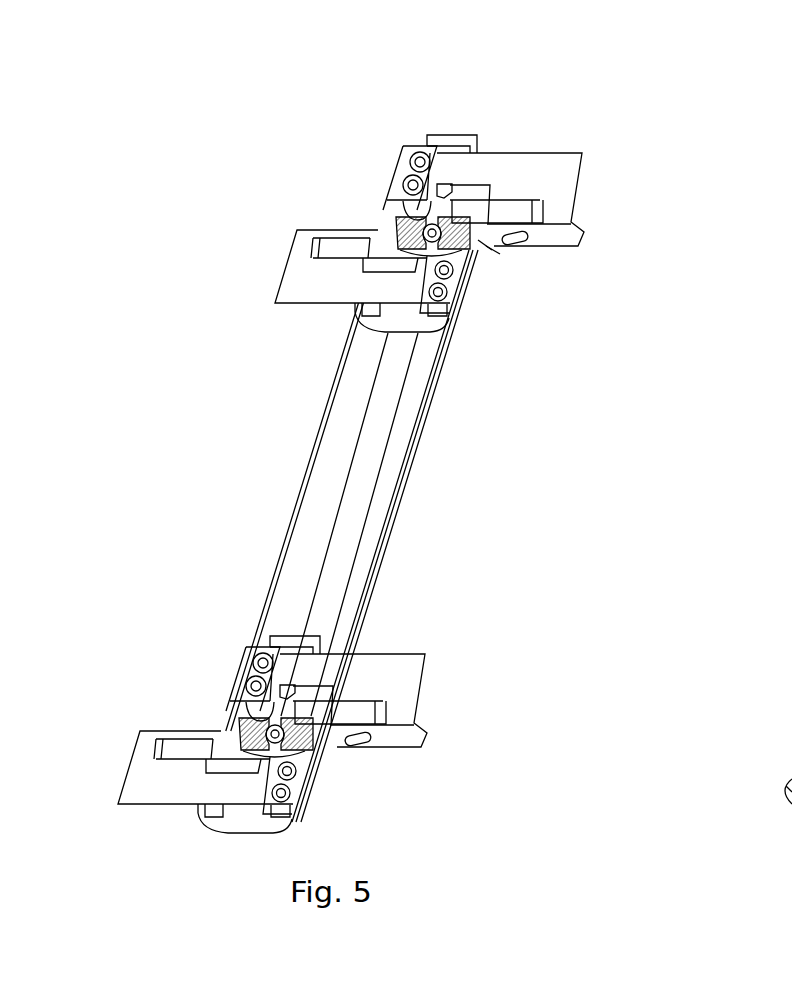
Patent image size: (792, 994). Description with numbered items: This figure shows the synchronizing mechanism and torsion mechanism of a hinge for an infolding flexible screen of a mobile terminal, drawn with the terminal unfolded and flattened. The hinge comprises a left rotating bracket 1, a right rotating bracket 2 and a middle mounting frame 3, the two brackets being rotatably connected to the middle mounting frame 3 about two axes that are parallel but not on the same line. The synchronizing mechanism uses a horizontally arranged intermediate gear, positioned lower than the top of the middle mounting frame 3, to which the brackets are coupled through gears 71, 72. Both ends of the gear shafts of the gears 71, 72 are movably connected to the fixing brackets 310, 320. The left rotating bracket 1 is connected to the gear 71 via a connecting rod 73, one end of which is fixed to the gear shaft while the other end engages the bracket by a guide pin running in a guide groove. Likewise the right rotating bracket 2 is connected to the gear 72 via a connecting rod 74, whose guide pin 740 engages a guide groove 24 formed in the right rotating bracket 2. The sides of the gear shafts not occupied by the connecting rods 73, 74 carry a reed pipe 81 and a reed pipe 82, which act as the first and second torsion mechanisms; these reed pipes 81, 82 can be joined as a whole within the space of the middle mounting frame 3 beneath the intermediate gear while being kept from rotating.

The left rotating bracket 1 is at (315, 287).
The right rotating bracket 2 is at (553, 195).
The middle mounting frame 3 is at (318, 487).
The guide groove 24 is at (497, 250).
The gear 71 is at (388, 213).
The gear 72 is at (487, 245).
The connecting rod 73 is at (362, 248).
The connecting rod 74 is at (513, 212).
The reed pipe 81 is at (413, 208).
The reed pipe 82 is at (475, 240).
The fixing bracket 310 is at (333, 760).
The fixing bracket 320 is at (253, 667).
The guide pin 740 is at (530, 236).